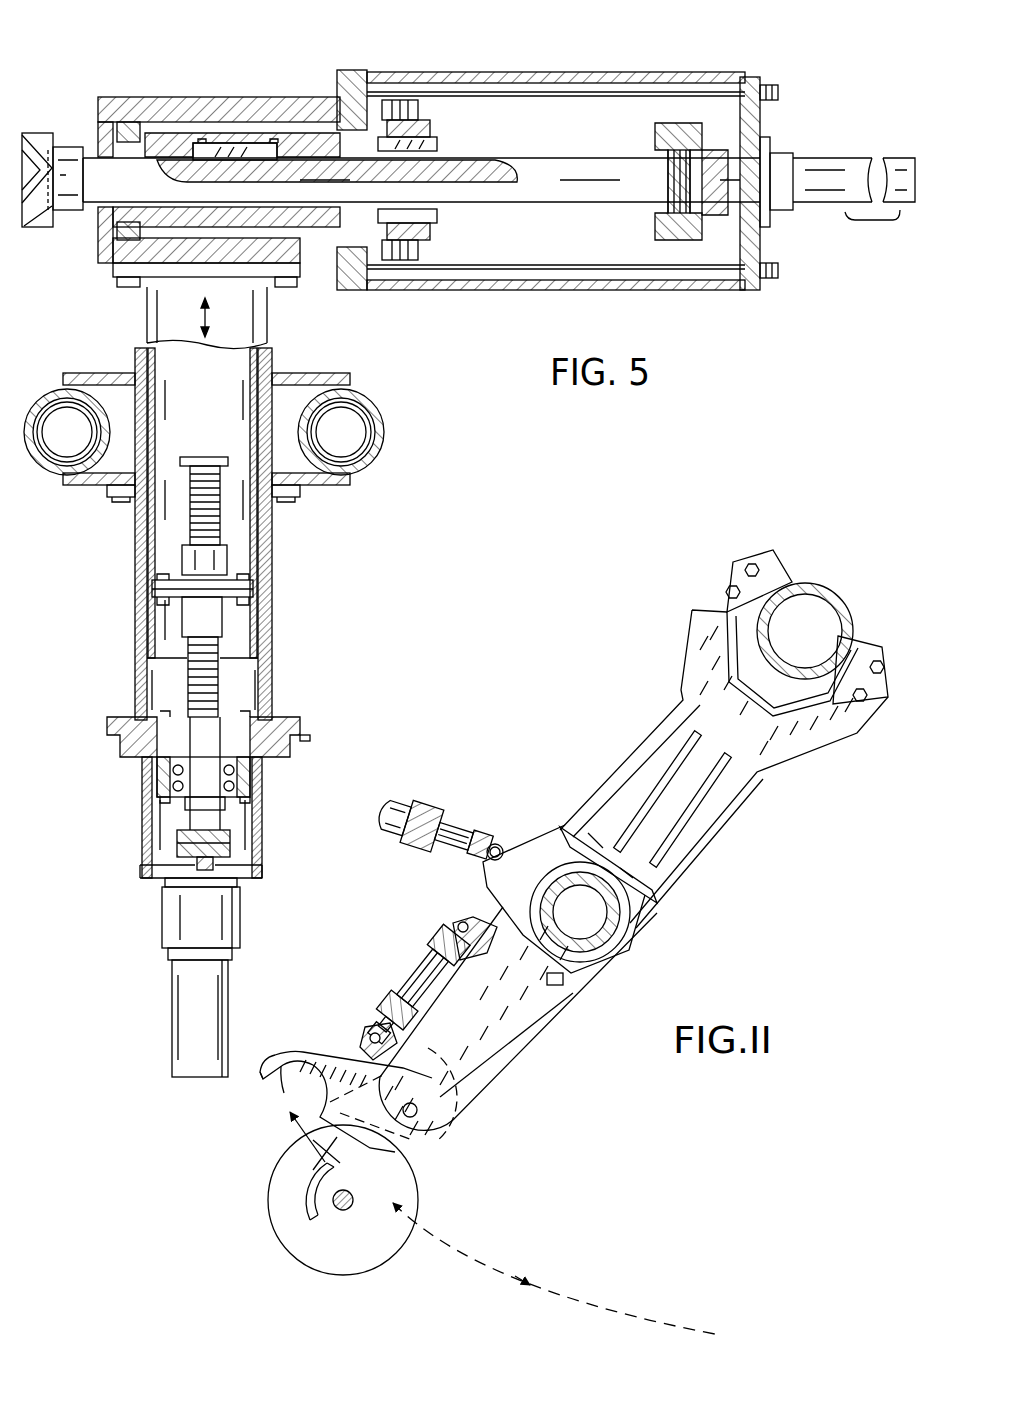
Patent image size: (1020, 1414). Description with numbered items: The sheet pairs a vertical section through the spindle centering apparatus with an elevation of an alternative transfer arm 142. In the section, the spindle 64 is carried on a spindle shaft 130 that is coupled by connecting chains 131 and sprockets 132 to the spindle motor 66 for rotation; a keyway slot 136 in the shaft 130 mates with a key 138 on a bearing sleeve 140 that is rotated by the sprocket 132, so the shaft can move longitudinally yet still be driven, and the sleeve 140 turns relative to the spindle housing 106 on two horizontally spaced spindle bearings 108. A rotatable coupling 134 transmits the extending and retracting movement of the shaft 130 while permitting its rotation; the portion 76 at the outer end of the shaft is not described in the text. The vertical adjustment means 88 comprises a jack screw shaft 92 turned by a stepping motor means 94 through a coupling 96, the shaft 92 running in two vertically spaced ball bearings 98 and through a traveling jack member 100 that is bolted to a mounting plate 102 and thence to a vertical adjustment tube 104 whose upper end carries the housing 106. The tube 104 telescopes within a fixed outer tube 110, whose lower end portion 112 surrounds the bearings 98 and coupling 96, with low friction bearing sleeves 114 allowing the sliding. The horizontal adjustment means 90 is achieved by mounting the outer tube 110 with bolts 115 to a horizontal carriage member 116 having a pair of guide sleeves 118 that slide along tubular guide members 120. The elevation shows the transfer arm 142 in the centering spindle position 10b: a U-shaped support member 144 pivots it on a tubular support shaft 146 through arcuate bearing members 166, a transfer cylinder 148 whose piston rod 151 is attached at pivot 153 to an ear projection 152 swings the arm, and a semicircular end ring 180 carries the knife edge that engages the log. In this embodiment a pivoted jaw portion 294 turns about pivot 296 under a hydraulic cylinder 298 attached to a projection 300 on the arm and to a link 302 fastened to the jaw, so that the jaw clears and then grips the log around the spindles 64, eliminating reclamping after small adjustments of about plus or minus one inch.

In FIG. 5, the spindle 64 is at (45, 133).
In FIG. 11, the spindle 64 is at (346, 1212).
In FIG. 5, the spindle motor 66 is at (485, 72).
In FIG. 5, the output shaft 76 is at (822, 158).
In FIG. 5, the vertical adjustment means 88 is at (295, 673).
In FIG. 5, the horizontal adjustment means 90 is at (386, 400).
In FIG. 5, the jack screw shaft 92 is at (220, 688).
In FIG. 5, the motor means 94 is at (215, 1035).
In FIG. 5, the coupling 96 is at (238, 832).
In FIG. 5, the ball bearings 98 is at (248, 735).
In FIG. 5, the traveling jack member 100 is at (212, 565).
In FIG. 5, the mounting plate 102 is at (238, 600).
In FIG. 5, the vertical adjustment tube 104 is at (252, 430).
In FIG. 5, the spindle housing 106 is at (318, 270).
In FIG. 5, the spindle bearings 108 is at (322, 112).
In FIG. 5, the outer tube 110 is at (136, 638).
In FIG. 5, the lower end portion 112 is at (146, 808).
In FIG. 5, the bearing sleeves 114 is at (150, 372).
In FIG. 5, the bolts 115 is at (120, 492).
In FIG. 5, the horizontal carriage member 116 is at (292, 378).
In FIG. 5, the guide sleeves 118 is at (48, 398).
In FIG. 5, the tubular guide members 120 is at (358, 436).
In FIG. 5, the spindle shaft 130 is at (592, 165).
In FIG. 5, the connecting chains 131 is at (398, 102).
In FIG. 5, the sprockets 132 is at (430, 118).
In FIG. 5, the rotatable coupling 134 is at (653, 212).
In FIG. 5, the keyway slot 136 is at (470, 162).
In FIG. 5, the key 138 is at (240, 143).
In FIG. 5, the bearing sleeve 140 is at (160, 130).
In FIG. 11, the transfer arms 142 is at (505, 1065).
In FIG. 11, the U-shaped support member 144 is at (812, 742).
In FIG. 11, the tubular support shaft 146 is at (836, 590).
In FIG. 11, the transfer cylinder 148 is at (395, 830).
In FIG. 11, the piston rod 151 is at (462, 828).
In FIG. 11, the ear projection 152 is at (522, 833).
In FIG. 11, the pivot 153 is at (496, 843).
In FIG. 11, the arcuate bearing members 166 is at (786, 585).
In FIG. 11, the semicircular ring 180 is at (273, 1082).
In FIG. 11, the pivoted jaw portion 294 is at (355, 1052).
In FIG. 11, the pivot 296 is at (418, 1117).
In FIG. 11, the hydraulic cylinder 298 is at (410, 990).
In FIG. 11, the projection 300 is at (461, 920).
In FIG. 11, the link 302 is at (370, 1036).
In FIG. 11, the centering spindle position 10b is at (270, 1198).